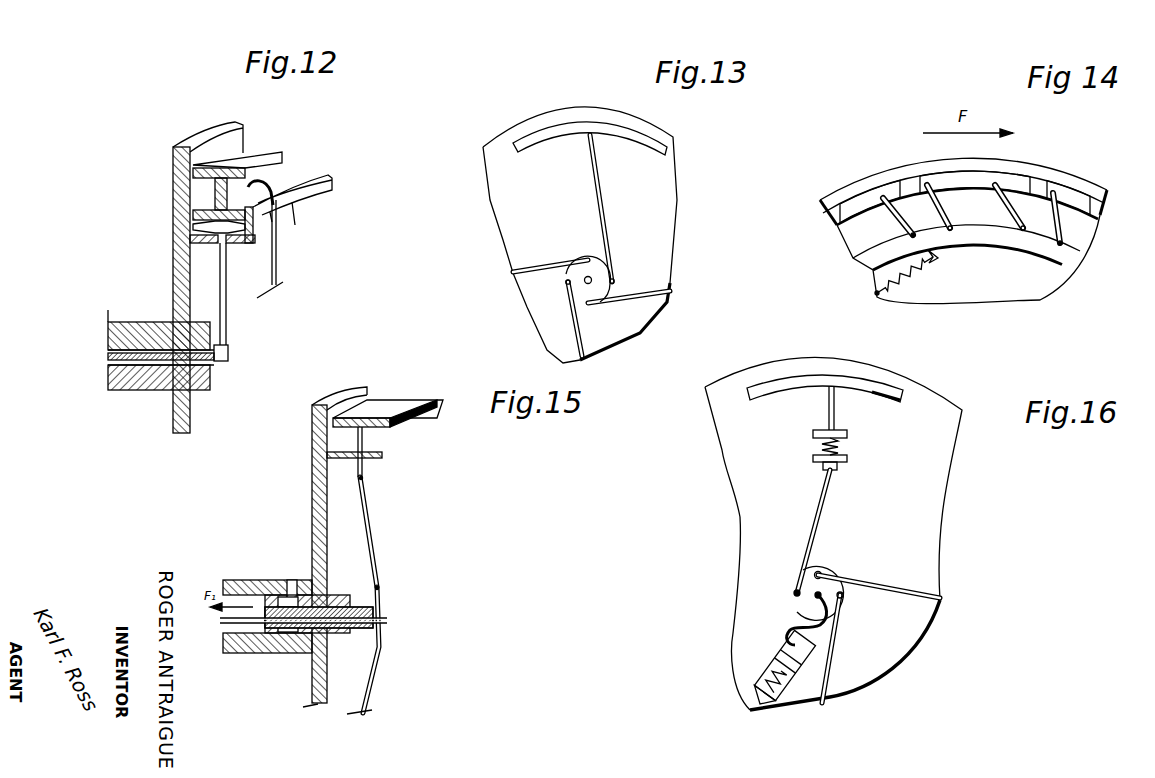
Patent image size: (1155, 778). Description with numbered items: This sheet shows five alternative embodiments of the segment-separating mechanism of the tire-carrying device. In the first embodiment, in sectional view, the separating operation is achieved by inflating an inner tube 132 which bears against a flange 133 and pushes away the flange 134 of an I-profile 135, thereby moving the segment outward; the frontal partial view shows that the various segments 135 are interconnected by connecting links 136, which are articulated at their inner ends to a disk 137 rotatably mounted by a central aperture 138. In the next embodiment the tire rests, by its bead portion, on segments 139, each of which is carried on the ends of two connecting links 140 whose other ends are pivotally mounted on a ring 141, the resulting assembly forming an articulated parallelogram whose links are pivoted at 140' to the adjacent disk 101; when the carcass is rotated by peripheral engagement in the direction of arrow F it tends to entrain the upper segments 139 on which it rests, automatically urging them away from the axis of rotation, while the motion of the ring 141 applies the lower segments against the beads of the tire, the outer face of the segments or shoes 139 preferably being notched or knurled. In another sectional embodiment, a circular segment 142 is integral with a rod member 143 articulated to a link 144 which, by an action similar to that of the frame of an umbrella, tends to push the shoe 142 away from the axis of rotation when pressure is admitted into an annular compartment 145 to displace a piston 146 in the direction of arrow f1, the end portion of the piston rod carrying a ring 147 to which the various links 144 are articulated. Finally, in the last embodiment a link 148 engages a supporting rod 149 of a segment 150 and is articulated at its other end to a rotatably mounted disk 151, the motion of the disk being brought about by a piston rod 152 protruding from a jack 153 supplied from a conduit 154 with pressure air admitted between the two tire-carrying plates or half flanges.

In FIG. 14, the disk 101 is at (1018, 280).
In FIG. 12, the inner tube 132 is at (198, 228).
In FIG. 12, the flange 133 is at (190, 240).
In FIG. 12, the flange 134 is at (215, 218).
In FIG. 12, the I-profile 135 is at (172, 148).
In FIG. 13, the I-profile 135 is at (535, 140).
In FIG. 12, the connecting link 136 is at (275, 258).
In FIG. 13, the connecting link 136 is at (598, 180).
In FIG. 13, the disk 137 is at (586, 278).
In FIG. 13, the central aperture 138 is at (585, 281).
In FIG. 14, the segment 139 is at (950, 180).
In FIG. 14, the connecting link 140 is at (936, 212).
In FIG. 14, the pivot 140' is at (1075, 192).
In FIG. 14, the ring 141 is at (884, 252).
In FIG. 15, the circular segment 142 is at (392, 426).
In FIG. 15, the rod member 143 is at (363, 441).
In FIG. 15, the link 144 is at (372, 502).
In FIG. 15, the annular compartment 145 is at (287, 583).
In FIG. 15, the piston 146 is at (272, 656).
In FIG. 15, the ring 147 is at (382, 602).
In FIG. 16, the link 148 is at (826, 495).
In FIG. 16, the supporting rod 149 is at (835, 414).
In FIG. 16, the segment 150 is at (886, 398).
In FIG. 16, the disk 151 is at (820, 590).
In FIG. 16, the piston rod 152 is at (817, 641).
In FIG. 16, the jack 153 is at (767, 672).
In FIG. 16, the conduit 154 is at (792, 637).